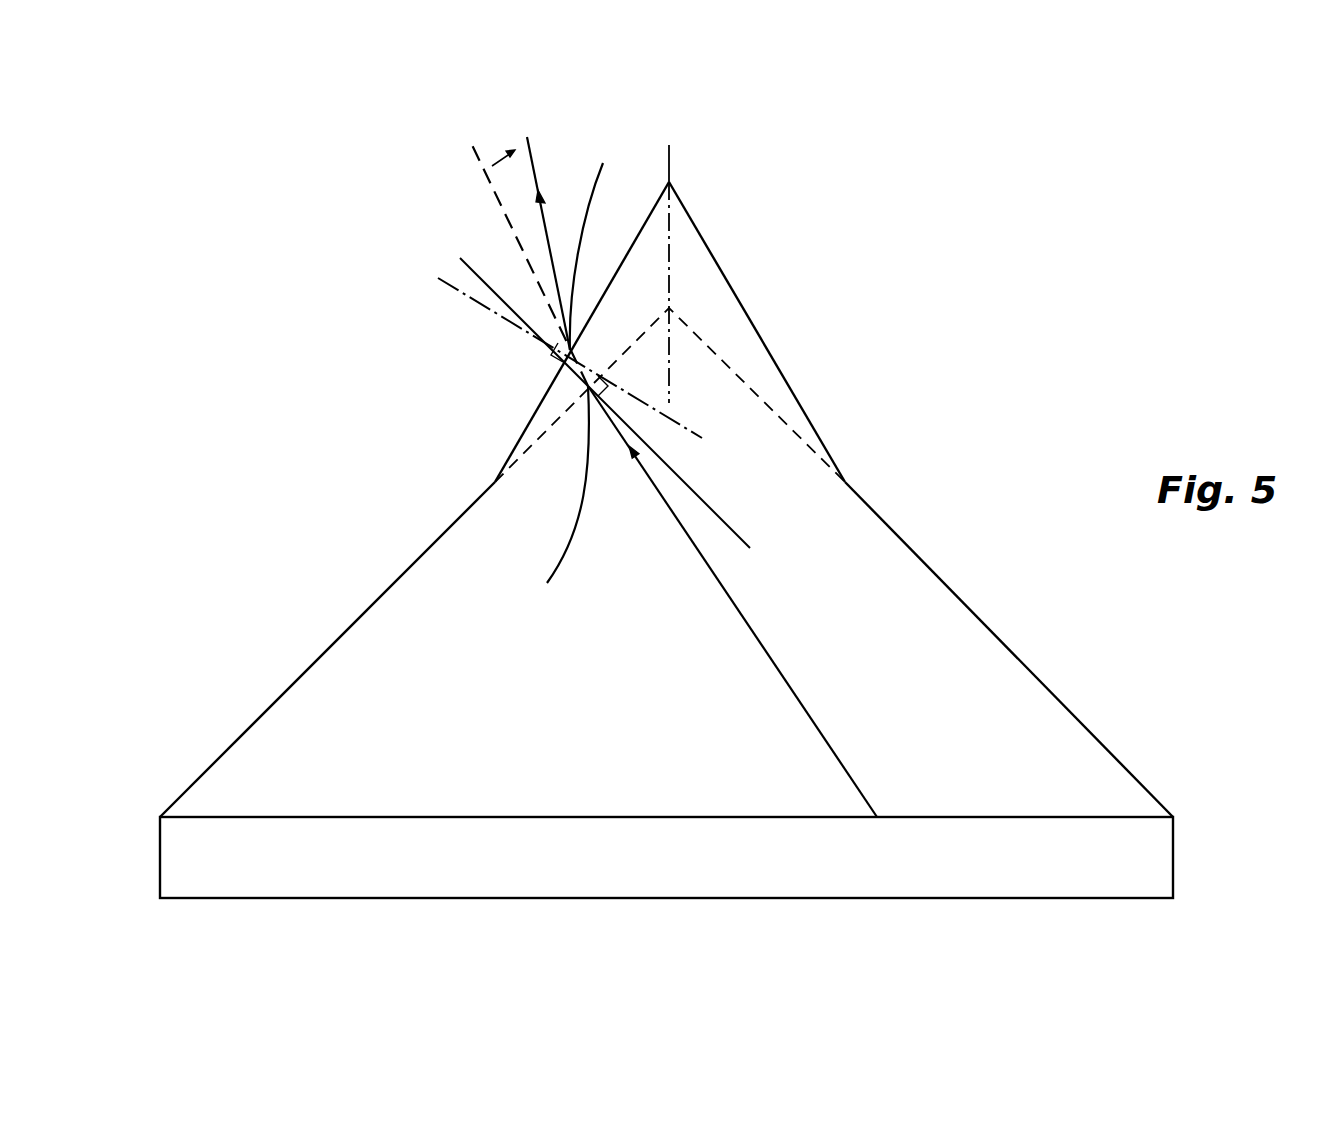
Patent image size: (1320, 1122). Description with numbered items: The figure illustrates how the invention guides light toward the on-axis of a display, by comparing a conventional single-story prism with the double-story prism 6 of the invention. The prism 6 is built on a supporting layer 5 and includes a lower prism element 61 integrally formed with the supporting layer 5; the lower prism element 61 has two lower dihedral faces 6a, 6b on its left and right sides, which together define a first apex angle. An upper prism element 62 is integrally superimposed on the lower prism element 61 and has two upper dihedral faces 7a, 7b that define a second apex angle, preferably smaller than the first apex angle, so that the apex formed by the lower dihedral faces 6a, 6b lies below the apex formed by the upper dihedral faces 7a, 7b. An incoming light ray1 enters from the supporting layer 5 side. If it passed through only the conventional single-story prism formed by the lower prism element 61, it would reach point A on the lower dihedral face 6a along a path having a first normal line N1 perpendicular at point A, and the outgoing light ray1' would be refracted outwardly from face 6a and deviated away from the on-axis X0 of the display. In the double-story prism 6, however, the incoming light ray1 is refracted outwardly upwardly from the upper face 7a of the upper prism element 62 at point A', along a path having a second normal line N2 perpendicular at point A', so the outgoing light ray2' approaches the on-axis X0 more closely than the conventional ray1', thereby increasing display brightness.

The supporting layer 5 is at (403, 872).
The prism 6 is at (666, 499).
The lower dihedral face 6a is at (313, 661).
The lower dihedral face 6b is at (1003, 636).
The upper dihedral face 7a is at (536, 405).
The upper dihedral face 7b is at (757, 325).
The lower prism element 61 is at (890, 550).
The upper prism element 62 is at (720, 297).
The on-axis X0 is at (669, 170).
The incoming light ray ray1 is at (879, 601).
The outgoing light ray ray1' is at (503, 250).
The outgoing light ray ray2' is at (525, 214).
The point A is at (555, 506).
The point A' is at (595, 232).
The first normal line N1 is at (588, 386).
The second normal line N2 is at (547, 351).